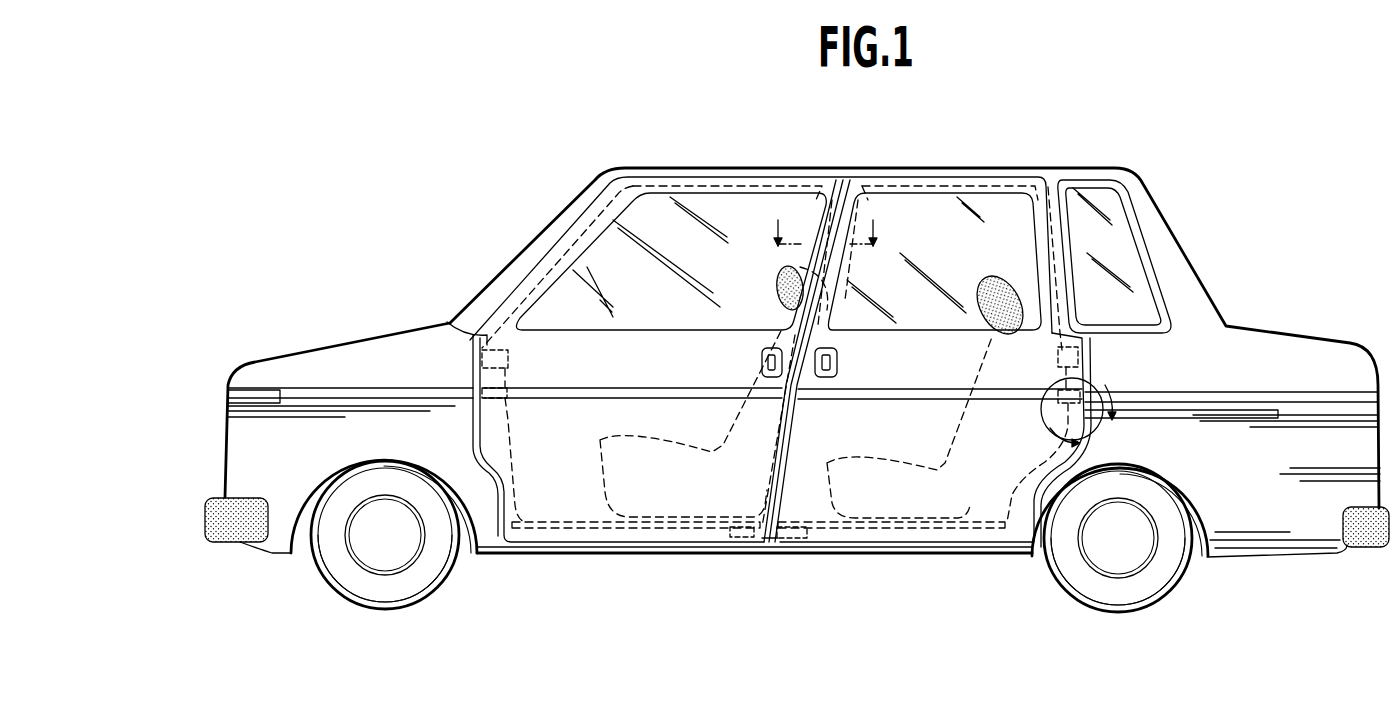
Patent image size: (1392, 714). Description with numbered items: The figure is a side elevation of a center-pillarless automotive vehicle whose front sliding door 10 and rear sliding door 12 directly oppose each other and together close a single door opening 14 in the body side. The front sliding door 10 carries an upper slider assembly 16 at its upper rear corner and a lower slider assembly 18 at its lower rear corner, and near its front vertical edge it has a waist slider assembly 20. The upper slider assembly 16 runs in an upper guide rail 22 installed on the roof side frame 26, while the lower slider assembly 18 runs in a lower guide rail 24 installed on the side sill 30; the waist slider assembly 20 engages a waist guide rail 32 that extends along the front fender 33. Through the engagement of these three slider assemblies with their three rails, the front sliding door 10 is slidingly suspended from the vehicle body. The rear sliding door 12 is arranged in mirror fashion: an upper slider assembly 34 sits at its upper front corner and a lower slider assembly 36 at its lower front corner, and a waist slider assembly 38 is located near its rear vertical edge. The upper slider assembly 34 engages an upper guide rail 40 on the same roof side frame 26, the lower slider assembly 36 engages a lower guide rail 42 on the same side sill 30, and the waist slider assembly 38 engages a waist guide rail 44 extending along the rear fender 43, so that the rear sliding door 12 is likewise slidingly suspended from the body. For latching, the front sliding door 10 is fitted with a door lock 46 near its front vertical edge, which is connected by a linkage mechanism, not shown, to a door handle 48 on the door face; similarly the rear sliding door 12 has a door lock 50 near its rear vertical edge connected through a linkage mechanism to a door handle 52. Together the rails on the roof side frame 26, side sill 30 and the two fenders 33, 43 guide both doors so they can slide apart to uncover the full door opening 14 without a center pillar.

The front sliding door 10 is at (568, 507).
The rear sliding door 12 is at (880, 515).
The door opening 14 is at (1053, 248).
The upper slider assembly 16 is at (830, 183).
The lower slider assembly 18 is at (742, 540).
The waist slider assembly 20 is at (483, 393).
The upper guide rail 22 is at (700, 182).
The lower guide rail 24 is at (643, 530).
The roof side frame 26 is at (780, 180).
The side sill 30 is at (697, 548).
The waist guide rail 32 is at (350, 392).
The front fender 33 is at (300, 350).
The upper slider assembly 34 is at (870, 182).
The lower slider assembly 36 is at (793, 540).
The waist slider assembly 38 is at (1085, 385).
The upper guide rail 40 is at (992, 183).
The lower guide rail 42 is at (942, 540).
The rear fender 43 is at (1328, 352).
The waist guide rail 44 is at (1238, 407).
The door lock 46 is at (490, 352).
The door handle 48 is at (762, 362).
The door lock 50 is at (1075, 352).
The door handle 52 is at (837, 362).